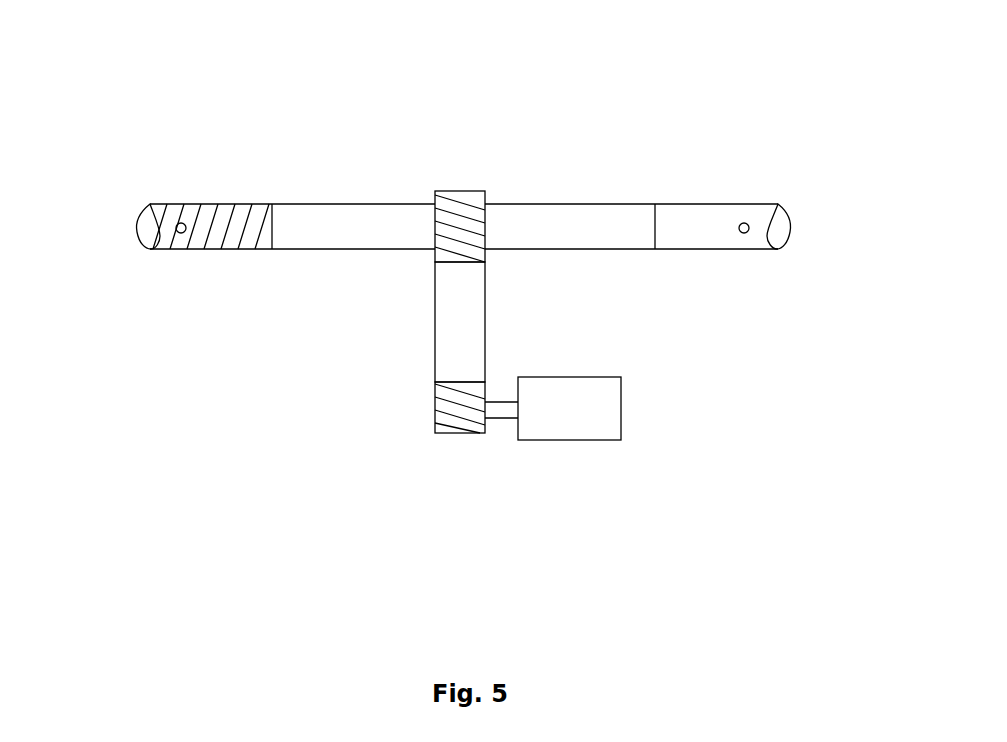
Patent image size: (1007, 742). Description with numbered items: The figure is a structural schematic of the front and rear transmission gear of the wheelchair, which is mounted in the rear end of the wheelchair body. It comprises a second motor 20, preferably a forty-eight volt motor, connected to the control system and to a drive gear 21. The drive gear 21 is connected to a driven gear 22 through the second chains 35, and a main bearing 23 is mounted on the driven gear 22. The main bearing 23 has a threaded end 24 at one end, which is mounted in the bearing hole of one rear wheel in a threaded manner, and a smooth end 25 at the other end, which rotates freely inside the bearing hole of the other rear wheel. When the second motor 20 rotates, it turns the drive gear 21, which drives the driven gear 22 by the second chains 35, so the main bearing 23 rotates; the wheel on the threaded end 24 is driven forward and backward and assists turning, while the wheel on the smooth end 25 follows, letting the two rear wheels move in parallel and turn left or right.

The second motor 20 is at (577, 423).
The drive gear 21 is at (447, 433).
The driven gear 22 is at (465, 195).
The main bearing 23 is at (349, 220).
The threaded end 24 is at (183, 211).
The smooth end 25 is at (760, 212).
The second chains 35 is at (487, 300).